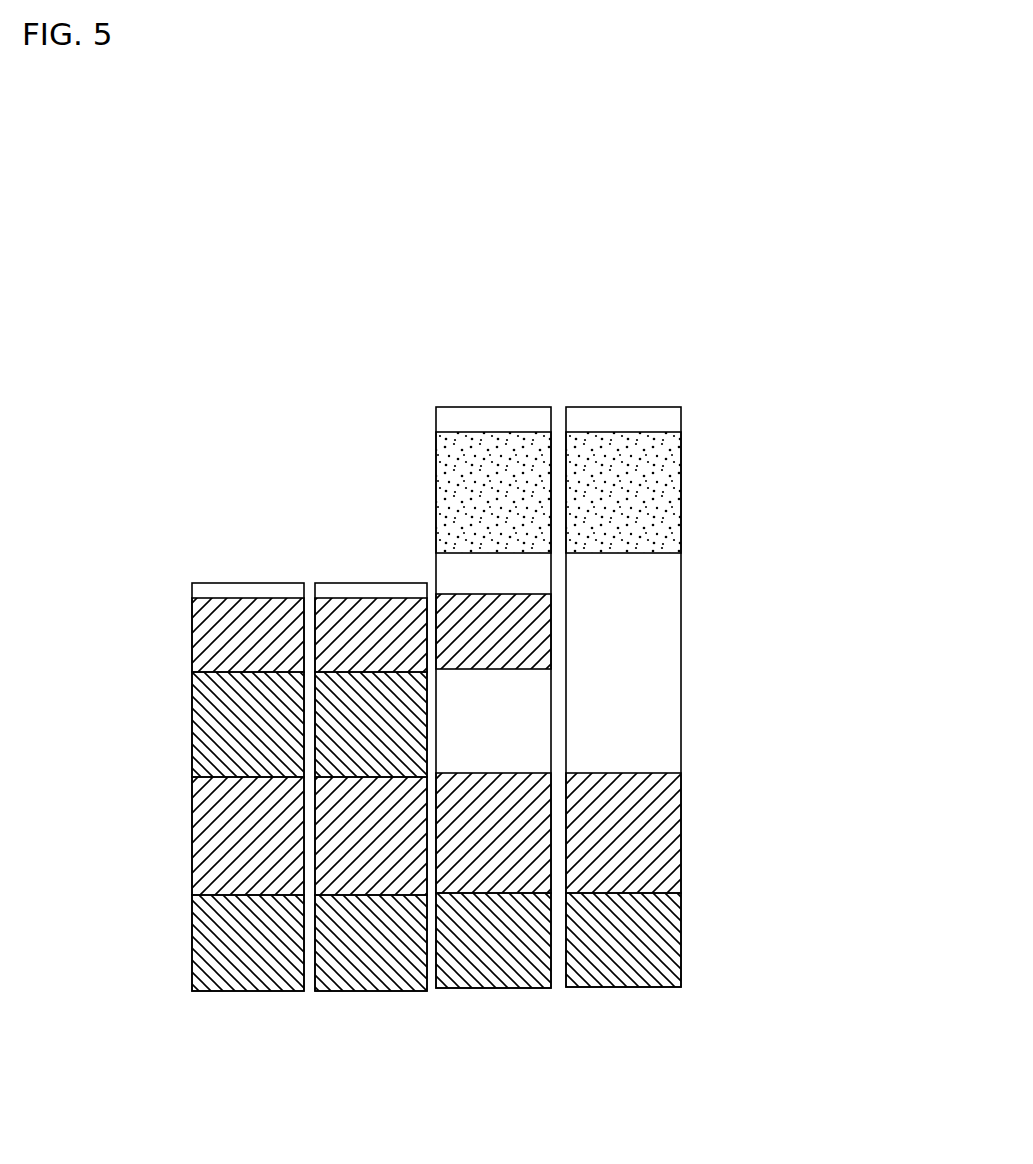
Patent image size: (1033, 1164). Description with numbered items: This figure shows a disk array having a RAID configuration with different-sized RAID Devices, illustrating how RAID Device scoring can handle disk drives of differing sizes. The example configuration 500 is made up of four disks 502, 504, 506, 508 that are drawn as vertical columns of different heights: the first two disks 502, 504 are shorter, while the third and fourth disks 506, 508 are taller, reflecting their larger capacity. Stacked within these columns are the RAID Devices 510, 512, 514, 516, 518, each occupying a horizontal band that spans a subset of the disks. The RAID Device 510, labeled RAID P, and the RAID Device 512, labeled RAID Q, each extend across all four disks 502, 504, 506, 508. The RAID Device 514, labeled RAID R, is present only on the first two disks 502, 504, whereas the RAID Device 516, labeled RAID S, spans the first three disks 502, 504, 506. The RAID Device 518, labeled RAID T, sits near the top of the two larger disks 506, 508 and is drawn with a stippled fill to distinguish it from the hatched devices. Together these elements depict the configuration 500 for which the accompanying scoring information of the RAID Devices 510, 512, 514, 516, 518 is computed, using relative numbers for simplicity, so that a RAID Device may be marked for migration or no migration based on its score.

The configuration 500 is at (814, 416).
The disk 502 is at (257, 505).
The disk 504 is at (365, 517).
The disk 506 is at (488, 355).
The disk 508 is at (623, 347).
The RAID Device 510 is at (682, 938).
The RAID Device 512 is at (682, 837).
The RAID Device 514 is at (192, 735).
The RAID Device 516 is at (192, 625).
The RAID Device 518 is at (681, 507).